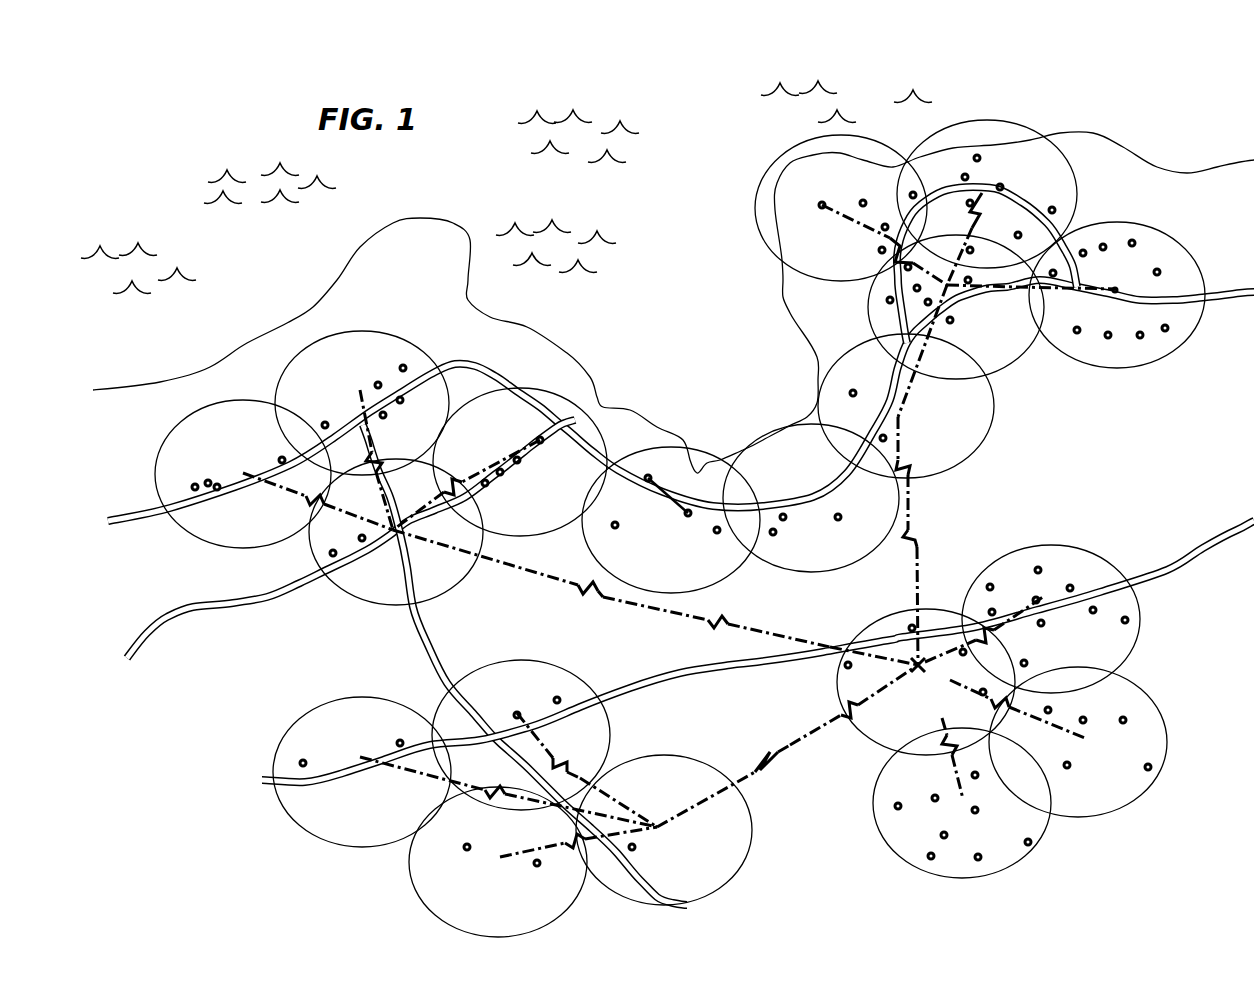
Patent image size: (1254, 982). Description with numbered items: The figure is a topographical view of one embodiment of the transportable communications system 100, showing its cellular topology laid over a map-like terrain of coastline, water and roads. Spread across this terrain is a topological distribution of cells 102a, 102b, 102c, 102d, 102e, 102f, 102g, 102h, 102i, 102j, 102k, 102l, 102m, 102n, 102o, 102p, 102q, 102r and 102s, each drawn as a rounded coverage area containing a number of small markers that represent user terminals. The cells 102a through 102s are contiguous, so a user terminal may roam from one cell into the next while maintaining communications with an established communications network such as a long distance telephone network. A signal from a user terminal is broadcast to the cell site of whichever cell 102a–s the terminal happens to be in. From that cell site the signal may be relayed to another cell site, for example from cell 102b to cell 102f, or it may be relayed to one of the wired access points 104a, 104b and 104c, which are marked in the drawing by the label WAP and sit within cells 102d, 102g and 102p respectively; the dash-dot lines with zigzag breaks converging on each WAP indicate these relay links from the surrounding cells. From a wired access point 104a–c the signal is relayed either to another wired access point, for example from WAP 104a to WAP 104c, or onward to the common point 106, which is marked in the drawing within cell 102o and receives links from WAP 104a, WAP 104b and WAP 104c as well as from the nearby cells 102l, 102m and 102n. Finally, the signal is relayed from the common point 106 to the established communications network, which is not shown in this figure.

The transportable communications system 100 is at (1233, 658).
The cell 102a is at (235, 398).
The cell 102b is at (365, 330).
The cell 102c is at (597, 397).
The cell 102d is at (347, 590).
The cell 102e is at (737, 583).
The cell 102f is at (750, 440).
The cell 102g is at (993, 430).
The cell 102h is at (1043, 355).
The cell 102i is at (1128, 223).
The cell 102j is at (1000, 122).
The cell 102k is at (762, 230).
The cell 102l is at (1043, 543).
The cell 102m is at (1092, 815).
The cell 102n is at (945, 880).
The cell 102o is at (877, 613).
The cell 102p is at (673, 755).
The cell 102q is at (510, 658).
The cell 102r is at (340, 697).
The cell 102s is at (408, 865).
The wired access point (WAP) 104a is at (378, 590).
The wired access point (WAP) 104b is at (934, 434).
The wired access point (WAP) 104c is at (687, 847).
The common point 106 is at (880, 682).